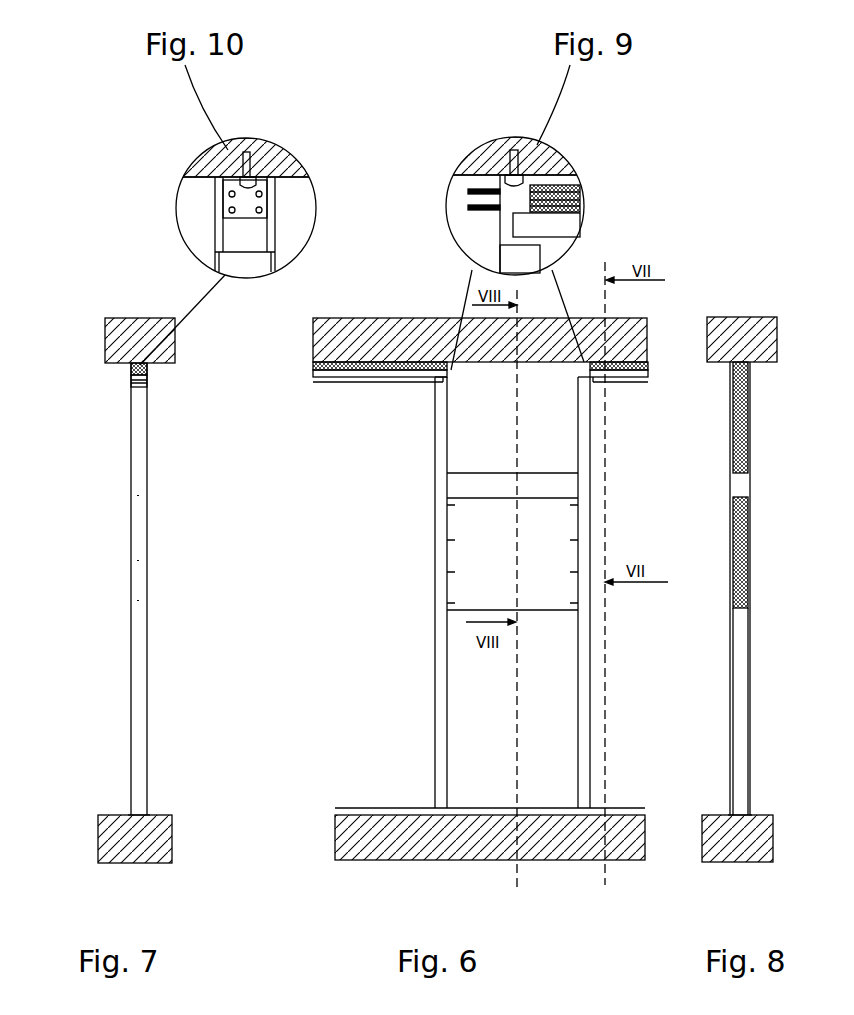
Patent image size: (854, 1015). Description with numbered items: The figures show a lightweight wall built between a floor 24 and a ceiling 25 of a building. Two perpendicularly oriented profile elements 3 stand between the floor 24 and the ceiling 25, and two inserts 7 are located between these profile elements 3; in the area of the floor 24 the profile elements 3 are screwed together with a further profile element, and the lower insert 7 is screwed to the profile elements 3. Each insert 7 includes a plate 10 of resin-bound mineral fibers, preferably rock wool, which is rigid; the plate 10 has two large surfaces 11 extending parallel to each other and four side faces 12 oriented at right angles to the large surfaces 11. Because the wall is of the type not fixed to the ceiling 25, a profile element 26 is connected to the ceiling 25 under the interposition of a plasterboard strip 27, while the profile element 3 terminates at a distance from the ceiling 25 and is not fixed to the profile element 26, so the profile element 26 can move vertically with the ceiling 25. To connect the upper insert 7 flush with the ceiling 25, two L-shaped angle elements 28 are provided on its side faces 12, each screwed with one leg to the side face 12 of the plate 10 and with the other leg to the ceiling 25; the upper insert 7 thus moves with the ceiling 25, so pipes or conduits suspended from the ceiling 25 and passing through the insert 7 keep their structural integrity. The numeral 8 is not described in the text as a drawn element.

In FIG. 6, the profile element 3 is at (435, 461).
In FIG. 7, the profile element 3 is at (131, 681).
In FIG. 8, the profile element 3 is at (730, 681).
In FIG. 6, the insert 7 is at (543, 630).
In FIG. 8, the insert 7 is at (768, 448).
In FIG. 9, the insert 7 is at (425, 182).
In FIG. 10, the insert 7 is at (193, 206).
In FIG. 6, the floor plate 8 is at (366, 809).
In FIG. 7, the floor plate 8 is at (127, 814).
In FIG. 8, the floor plate 8 is at (729, 814).
In FIG. 9, the plate 10 is at (462, 234).
In FIG. 10, the plate 10 is at (225, 247).
In FIG. 6, the large surface 11 is at (523, 424).
In FIG. 9, the large surface 11 is at (497, 244).
In FIG. 9, the side face 12 is at (510, 230).
In FIG. 10, the side face 12 is at (256, 247).
In FIG. 6, the floor 24 is at (490, 837).
In FIG. 7, the floor 24 is at (135, 839).
In FIG. 8, the floor 24 is at (737, 838).
In FIG. 6, the ceiling 25 is at (480, 340).
In FIG. 7, the ceiling 25 is at (140, 340).
In FIG. 8, the ceiling 25 is at (742, 339).
In FIG. 9, the ceiling 25 is at (472, 161).
In FIG. 10, the ceiling 25 is at (268, 157).
In FIG. 6, the profile element 26 is at (382, 383).
In FIG. 7, the profile element 26 is at (131, 382).
In FIG. 6, the plasterboard strip 27 is at (328, 362).
In FIG. 7, the plasterboard strip 27 is at (131, 370).
In FIG. 6, the L-shaped angle element 28 is at (648, 377).
In FIG. 9, the L-shaped angle element 28 is at (523, 195).
In FIG. 10, the L-shaped angle element 28 is at (253, 203).